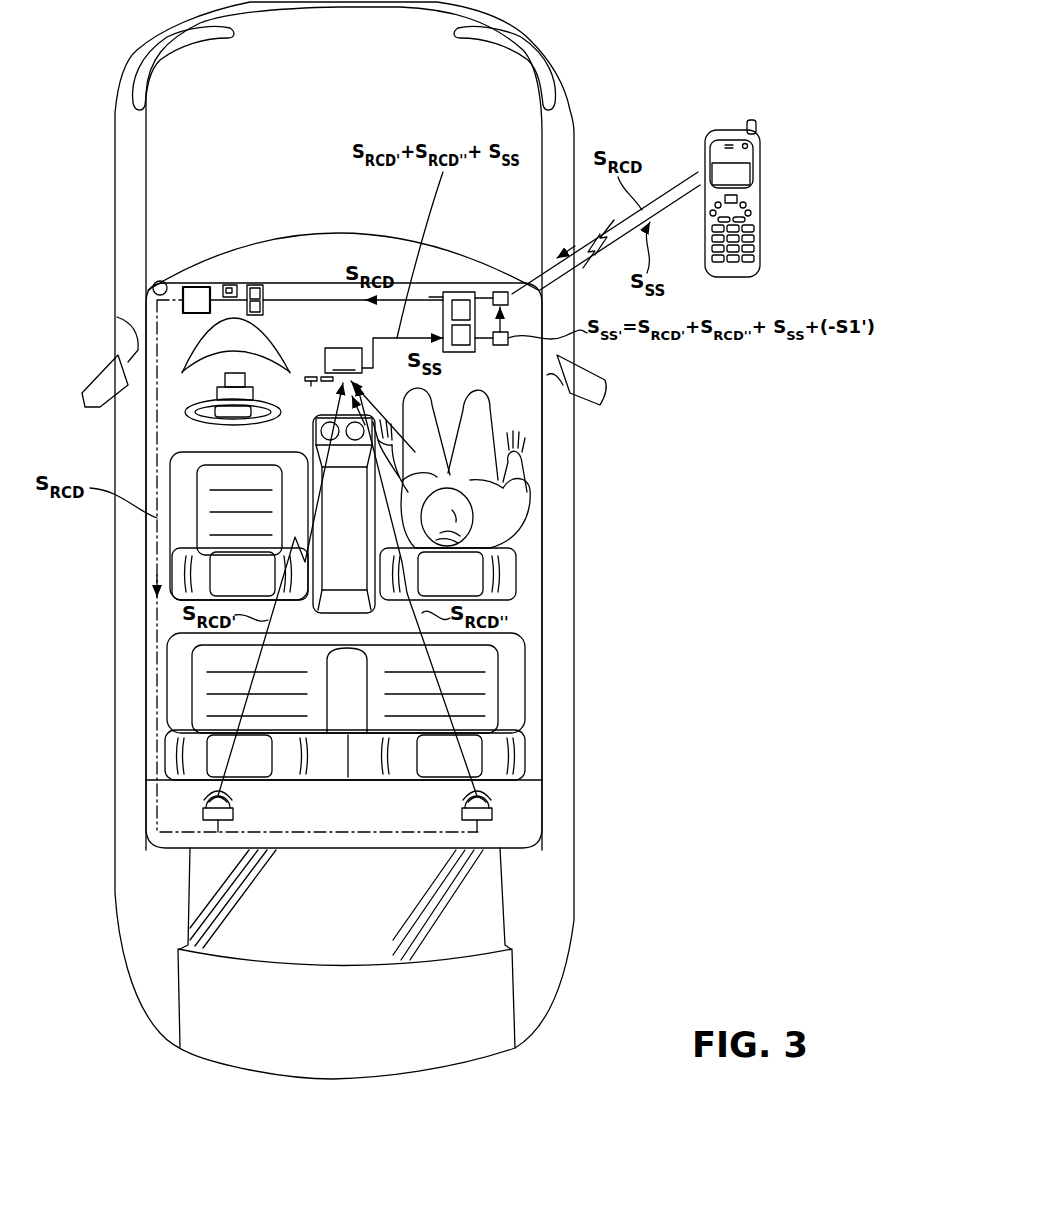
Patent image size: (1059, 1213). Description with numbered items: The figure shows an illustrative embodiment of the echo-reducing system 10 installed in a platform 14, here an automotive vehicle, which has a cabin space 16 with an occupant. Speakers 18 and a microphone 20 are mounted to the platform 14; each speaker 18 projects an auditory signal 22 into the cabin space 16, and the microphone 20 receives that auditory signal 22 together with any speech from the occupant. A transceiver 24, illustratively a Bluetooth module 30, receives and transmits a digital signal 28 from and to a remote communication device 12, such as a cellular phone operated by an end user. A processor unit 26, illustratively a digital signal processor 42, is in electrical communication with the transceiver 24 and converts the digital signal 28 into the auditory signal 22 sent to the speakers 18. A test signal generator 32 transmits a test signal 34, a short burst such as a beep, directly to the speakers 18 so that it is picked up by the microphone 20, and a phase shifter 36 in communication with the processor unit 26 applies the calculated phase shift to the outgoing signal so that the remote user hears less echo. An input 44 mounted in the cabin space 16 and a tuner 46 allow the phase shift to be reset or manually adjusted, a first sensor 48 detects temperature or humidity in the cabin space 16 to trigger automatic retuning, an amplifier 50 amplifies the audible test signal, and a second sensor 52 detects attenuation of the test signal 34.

The system 10 is at (578, 29).
The remote communication device 12 is at (750, 158).
The platform 14 is at (628, 569).
The cabin space 16 is at (192, 425).
The speaker 18 is at (233, 812).
The microphone 20 is at (384, 355).
The auditory signal 22 is at (215, 787).
The transceiver 24 is at (520, 249).
The processor unit 26 is at (477, 285).
The digital signal 28 is at (346, 247).
The Bluetooth module 30 is at (503, 292).
The test signal generator 32 is at (250, 284).
The test signal 34 is at (221, 286).
The phase shifter 36 is at (495, 346).
The digital signal processor 42 is at (458, 292).
The input 44 is at (256, 411).
The tuner 46 is at (315, 378).
The first sensor 48 is at (160, 281).
The amplifier 50 is at (196, 287).
The second sensor 52 is at (429, 297).